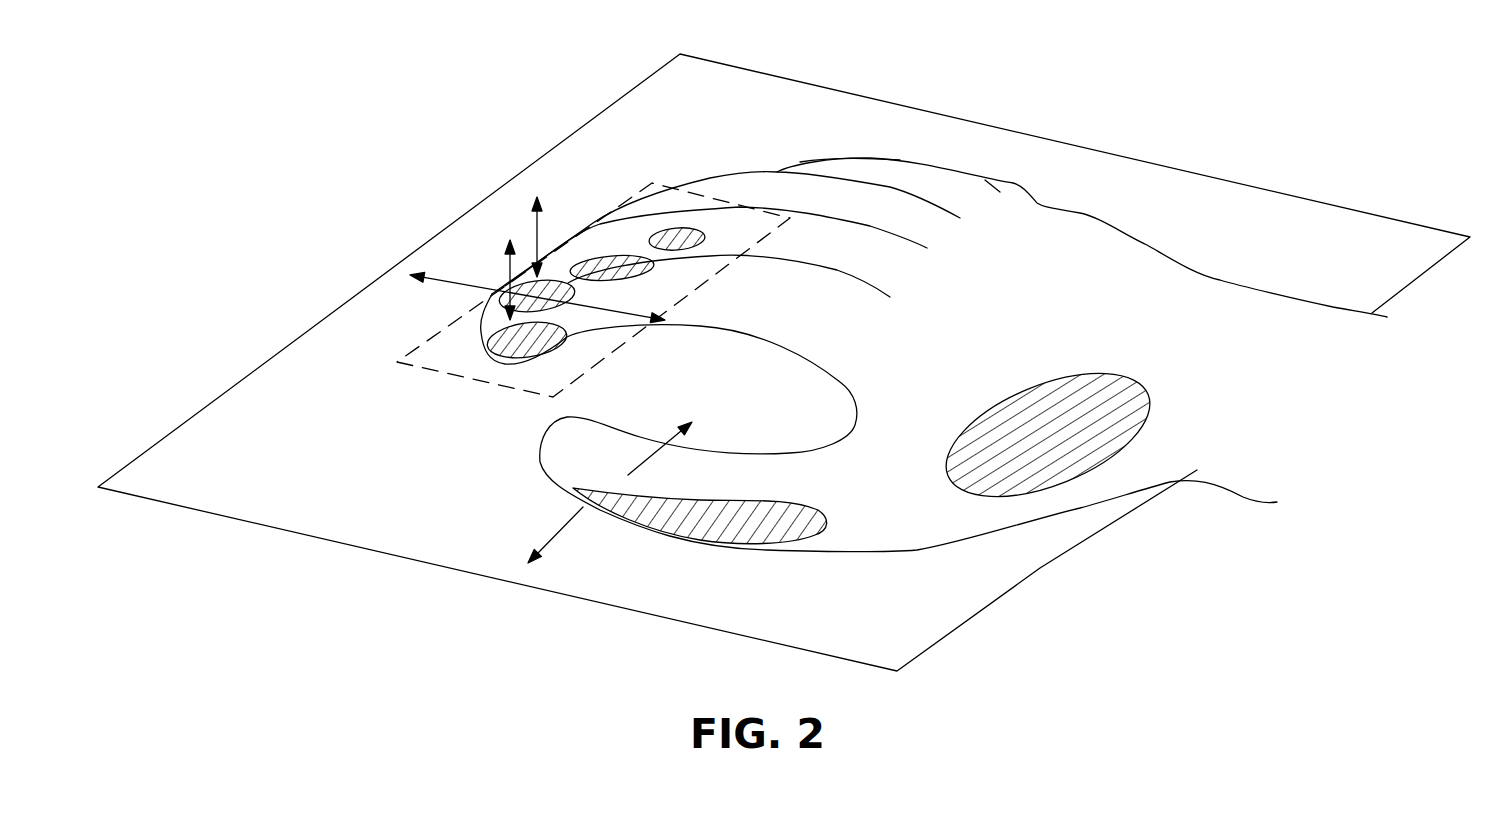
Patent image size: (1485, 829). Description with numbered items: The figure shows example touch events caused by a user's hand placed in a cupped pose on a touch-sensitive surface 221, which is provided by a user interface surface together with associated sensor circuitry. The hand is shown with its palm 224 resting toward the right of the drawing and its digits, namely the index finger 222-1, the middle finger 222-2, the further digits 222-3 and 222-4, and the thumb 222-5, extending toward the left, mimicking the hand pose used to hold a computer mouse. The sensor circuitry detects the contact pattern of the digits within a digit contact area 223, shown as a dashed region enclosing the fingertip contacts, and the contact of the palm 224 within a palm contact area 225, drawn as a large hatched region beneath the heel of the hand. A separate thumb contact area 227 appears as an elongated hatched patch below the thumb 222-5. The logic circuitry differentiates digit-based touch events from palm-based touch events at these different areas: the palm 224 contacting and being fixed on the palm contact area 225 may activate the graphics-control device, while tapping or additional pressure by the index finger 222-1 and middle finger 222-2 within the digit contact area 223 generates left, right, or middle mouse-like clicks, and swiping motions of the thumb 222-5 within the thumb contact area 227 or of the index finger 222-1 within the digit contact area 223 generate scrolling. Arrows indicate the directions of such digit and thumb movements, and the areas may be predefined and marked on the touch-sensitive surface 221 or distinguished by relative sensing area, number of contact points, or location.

The touch-sensitive surface 221 is at (368, 286).
The index finger 222-1 is at (566, 334).
The middle finger 222-2 is at (597, 250).
The digit 222-3 is at (740, 187).
The digit 222-4 is at (858, 172).
The thumb 222-5 is at (600, 421).
The digit contact area 223 is at (640, 184).
The palm 224 is at (1135, 480).
The palm contact area 225 is at (1120, 377).
The thumb contact area 227 is at (757, 497).